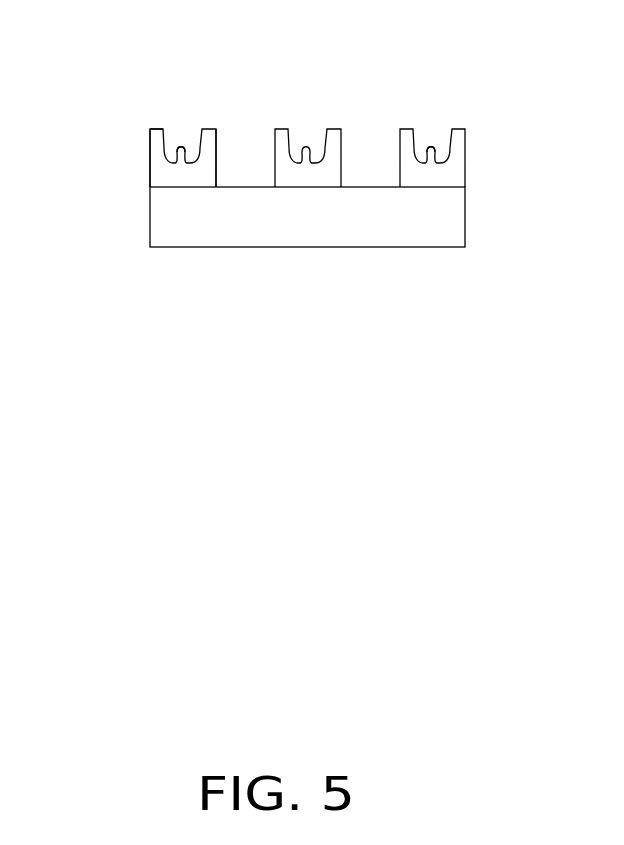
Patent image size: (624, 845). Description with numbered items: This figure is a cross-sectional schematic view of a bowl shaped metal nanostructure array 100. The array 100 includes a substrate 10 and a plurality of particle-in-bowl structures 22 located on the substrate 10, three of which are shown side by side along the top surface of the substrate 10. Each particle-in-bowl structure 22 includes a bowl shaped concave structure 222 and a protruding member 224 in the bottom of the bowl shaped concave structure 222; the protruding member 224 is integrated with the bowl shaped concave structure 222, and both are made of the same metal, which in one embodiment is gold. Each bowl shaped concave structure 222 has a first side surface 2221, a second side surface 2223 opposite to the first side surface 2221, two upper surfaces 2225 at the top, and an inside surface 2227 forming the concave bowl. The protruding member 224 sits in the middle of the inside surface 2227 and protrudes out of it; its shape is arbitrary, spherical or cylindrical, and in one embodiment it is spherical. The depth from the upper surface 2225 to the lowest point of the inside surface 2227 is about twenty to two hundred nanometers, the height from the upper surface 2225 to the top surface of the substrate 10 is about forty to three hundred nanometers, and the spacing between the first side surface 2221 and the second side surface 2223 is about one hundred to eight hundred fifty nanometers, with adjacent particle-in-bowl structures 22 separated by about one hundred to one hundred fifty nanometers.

The bowl shaped metal nanostructure array 100 is at (330, 131).
The substrate 10 is at (452, 213).
The particle-in-bowl structure 22 is at (330, 125).
The bowl shaped concave structure 222 is at (450, 177).
The protruding member 224 is at (433, 153).
The first side surface 2221 is at (148, 160).
The second side surface 2223 is at (218, 145).
The upper surface 2225 is at (157, 128).
The inside surface 2227 is at (168, 148).